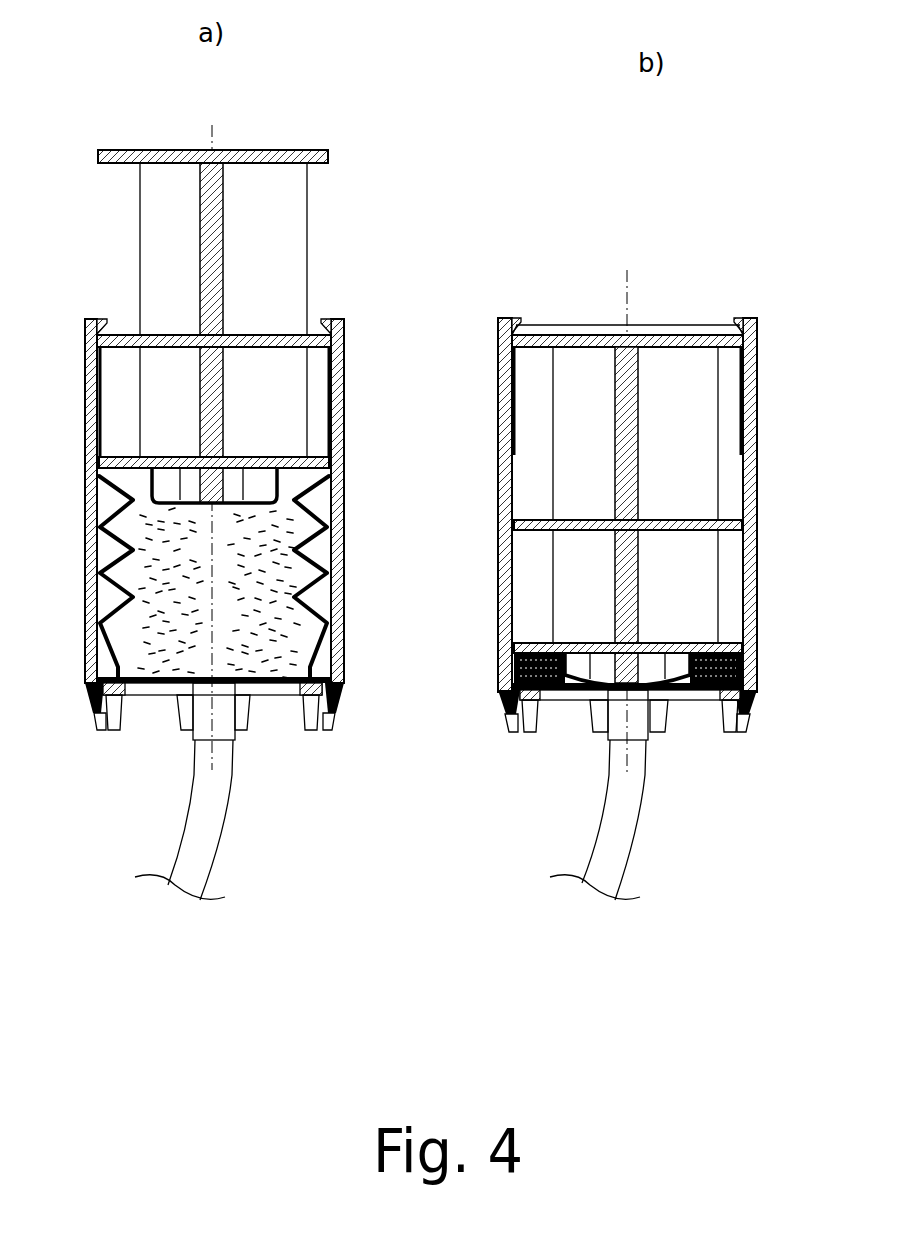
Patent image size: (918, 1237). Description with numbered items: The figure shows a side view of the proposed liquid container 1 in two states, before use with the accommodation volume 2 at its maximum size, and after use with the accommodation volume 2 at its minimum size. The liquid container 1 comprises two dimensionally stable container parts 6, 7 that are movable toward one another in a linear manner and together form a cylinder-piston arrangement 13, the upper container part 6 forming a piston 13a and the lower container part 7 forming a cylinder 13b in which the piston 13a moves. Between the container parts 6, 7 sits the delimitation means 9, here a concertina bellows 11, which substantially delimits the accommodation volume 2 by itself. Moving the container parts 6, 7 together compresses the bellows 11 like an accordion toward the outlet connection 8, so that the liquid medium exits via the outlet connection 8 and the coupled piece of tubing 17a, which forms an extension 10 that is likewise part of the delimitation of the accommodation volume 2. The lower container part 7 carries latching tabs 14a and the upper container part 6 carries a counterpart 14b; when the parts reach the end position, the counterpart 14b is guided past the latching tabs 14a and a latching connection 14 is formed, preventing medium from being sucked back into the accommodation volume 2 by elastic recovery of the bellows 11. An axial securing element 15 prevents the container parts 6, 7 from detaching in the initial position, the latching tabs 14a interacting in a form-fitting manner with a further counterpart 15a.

The liquid container 1 is at (100, 92).
The accommodation volume 2 is at (270, 636).
The upper container part 6 is at (467, 378).
The lower container part 7 is at (484, 567).
The outlet connection 8 is at (203, 728).
The delimitation means 9 is at (484, 612).
The extension 10 is at (455, 820).
The bellows 11 is at (311, 608).
The cylinder-piston arrangement 13 is at (420, 263).
The piston 13a is at (258, 148).
The cylinder 13b is at (346, 513).
The latching connection 14 is at (770, 312).
The latching tab 14a is at (341, 335).
The counterpart 14b is at (331, 158).
The axial securing element 15 is at (358, 323).
The further counterpart 15a is at (306, 327).
The piece of tubing 17a is at (205, 817).